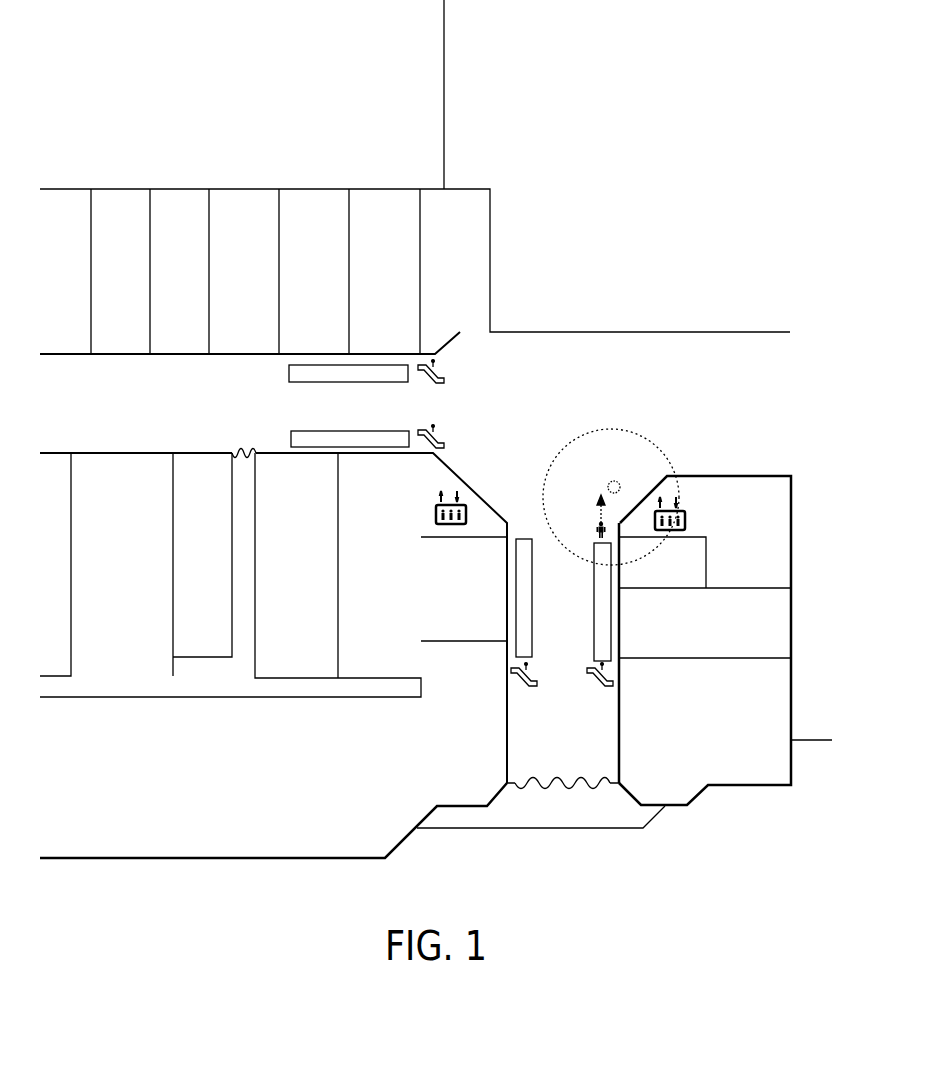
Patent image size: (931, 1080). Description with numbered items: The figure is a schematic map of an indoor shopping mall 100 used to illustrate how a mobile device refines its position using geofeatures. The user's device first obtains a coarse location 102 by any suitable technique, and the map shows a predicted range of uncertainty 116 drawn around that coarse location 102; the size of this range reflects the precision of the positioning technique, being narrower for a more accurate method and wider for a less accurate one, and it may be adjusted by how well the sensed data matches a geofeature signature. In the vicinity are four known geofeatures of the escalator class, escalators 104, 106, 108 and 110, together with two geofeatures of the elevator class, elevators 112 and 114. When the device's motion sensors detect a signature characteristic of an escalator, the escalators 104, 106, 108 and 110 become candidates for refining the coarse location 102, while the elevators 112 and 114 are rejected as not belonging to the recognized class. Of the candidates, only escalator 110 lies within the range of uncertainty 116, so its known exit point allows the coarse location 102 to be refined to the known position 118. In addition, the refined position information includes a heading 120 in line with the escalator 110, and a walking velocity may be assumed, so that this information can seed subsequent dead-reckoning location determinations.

The indoor shopping mall 100 is at (246, 68).
The coarse location 102 is at (620, 482).
The escalator 104 is at (322, 383).
The escalator 106 is at (313, 430).
The escalator 108 is at (533, 630).
The escalator 110 is at (593, 593).
The elevator 112 is at (470, 497).
The elevator 114 is at (690, 505).
The predicted range of uncertainty 116 is at (607, 426).
The known position 118 is at (592, 527).
The heading 120 is at (596, 497).